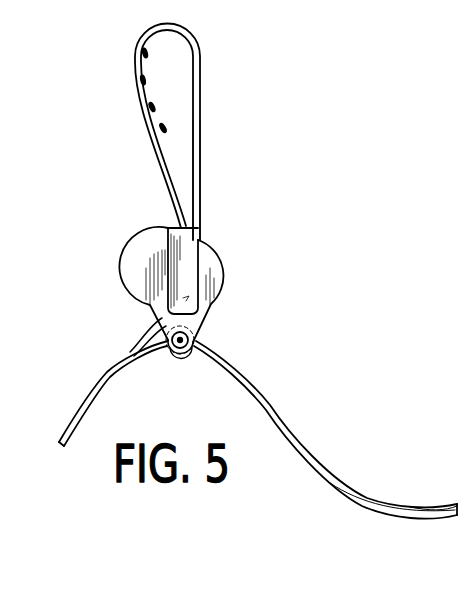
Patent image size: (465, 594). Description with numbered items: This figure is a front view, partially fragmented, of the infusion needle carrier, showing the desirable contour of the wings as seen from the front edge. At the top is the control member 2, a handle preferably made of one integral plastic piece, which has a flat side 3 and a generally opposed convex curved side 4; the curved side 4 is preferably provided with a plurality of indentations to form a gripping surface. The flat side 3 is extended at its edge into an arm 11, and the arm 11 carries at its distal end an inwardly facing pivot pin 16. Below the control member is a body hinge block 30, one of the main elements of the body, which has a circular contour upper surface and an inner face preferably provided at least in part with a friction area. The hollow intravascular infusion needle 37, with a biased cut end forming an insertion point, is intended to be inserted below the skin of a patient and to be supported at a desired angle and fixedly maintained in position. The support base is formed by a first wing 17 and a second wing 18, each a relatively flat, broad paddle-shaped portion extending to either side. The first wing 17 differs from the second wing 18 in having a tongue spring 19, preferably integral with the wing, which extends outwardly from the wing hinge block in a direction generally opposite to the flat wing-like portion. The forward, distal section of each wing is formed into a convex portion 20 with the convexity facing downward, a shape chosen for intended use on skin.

The control member 2 is at (205, 76).
The flat side 3 is at (201, 121).
The curved side 4 is at (146, 117).
The arm 11 is at (186, 256).
The pivot pin 16 is at (208, 292).
The first wing 17 is at (277, 415).
The second wing 18 is at (84, 402).
The tongue spring 19 is at (137, 343).
The convex portion 20 is at (384, 512).
The body hinge block 30 is at (202, 317).
The intravascular infusion needle 37 is at (183, 349).